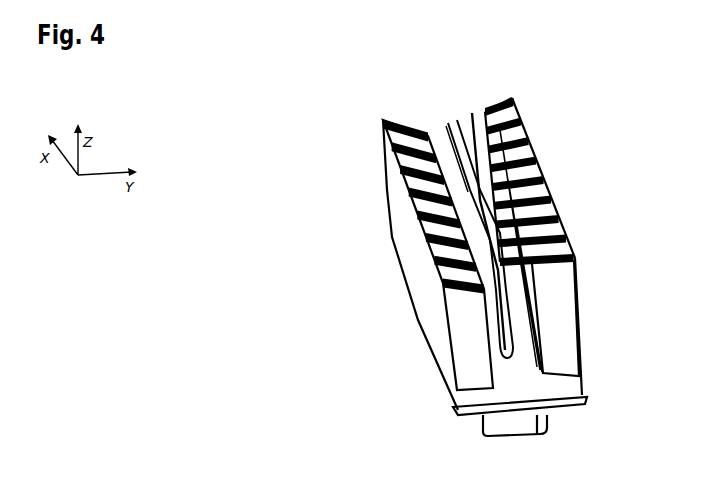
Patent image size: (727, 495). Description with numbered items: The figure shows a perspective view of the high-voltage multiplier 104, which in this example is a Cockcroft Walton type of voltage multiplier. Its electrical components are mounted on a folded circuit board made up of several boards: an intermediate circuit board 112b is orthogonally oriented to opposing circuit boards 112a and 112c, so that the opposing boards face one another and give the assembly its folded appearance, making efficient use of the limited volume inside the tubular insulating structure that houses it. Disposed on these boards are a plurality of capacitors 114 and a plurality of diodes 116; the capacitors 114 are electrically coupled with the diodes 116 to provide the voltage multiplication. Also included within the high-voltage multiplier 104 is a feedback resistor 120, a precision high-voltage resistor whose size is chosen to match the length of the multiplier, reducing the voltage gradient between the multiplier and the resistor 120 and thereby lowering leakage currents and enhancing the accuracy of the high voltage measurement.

The high-voltage multiplier 104 is at (340, 174).
The opposing circuit board 112a is at (408, 244).
The intermediate circuit board 112b is at (540, 383).
The opposing circuit board 112c is at (514, 99).
The capacitors 114 is at (550, 282).
The diodes 116 is at (515, 423).
The feedback resistor 120 is at (458, 122).